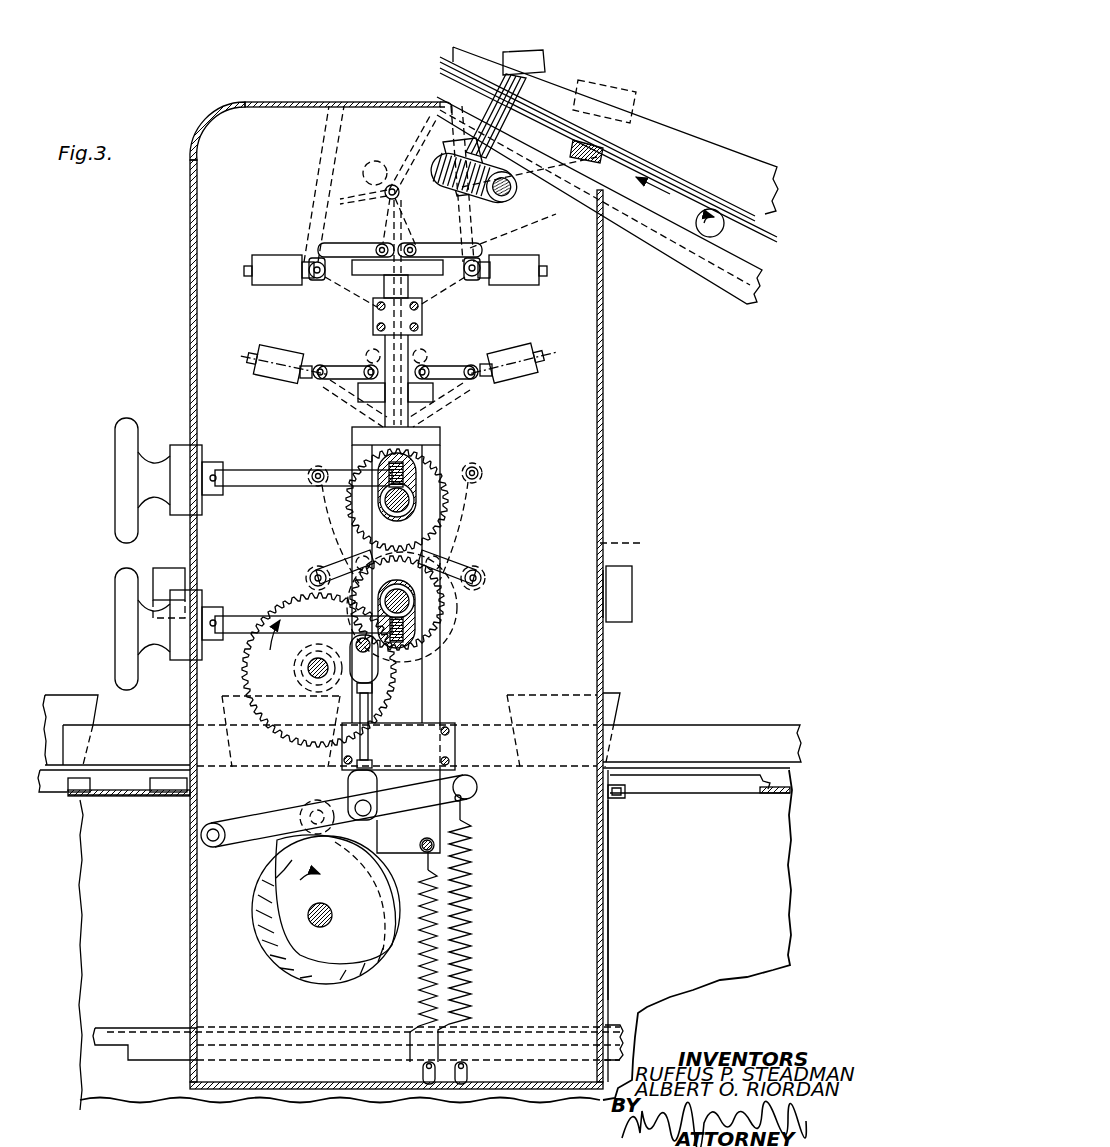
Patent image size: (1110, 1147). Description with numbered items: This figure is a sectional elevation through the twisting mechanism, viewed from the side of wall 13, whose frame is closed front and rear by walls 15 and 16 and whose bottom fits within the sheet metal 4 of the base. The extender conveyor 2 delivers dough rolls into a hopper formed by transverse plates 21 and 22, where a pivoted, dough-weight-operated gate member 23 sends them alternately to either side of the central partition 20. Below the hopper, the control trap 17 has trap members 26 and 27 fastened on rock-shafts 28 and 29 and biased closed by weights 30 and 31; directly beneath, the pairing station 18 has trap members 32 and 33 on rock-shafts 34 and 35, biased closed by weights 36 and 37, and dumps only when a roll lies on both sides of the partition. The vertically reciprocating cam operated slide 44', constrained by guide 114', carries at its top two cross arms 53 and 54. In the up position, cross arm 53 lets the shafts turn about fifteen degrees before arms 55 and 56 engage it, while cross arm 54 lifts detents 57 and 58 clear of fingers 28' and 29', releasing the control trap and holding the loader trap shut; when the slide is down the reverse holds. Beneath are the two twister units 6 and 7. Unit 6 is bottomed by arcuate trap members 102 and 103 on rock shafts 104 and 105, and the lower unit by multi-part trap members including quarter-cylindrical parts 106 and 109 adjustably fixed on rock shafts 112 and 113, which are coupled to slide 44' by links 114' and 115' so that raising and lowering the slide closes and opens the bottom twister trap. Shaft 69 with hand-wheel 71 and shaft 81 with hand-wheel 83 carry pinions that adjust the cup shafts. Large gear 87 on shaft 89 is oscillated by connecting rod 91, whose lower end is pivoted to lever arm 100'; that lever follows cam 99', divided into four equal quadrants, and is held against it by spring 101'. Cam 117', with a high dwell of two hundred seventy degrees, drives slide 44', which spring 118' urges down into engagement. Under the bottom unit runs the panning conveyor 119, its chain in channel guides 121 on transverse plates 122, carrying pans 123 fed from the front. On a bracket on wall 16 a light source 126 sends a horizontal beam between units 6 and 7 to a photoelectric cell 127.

The extender conveyor 2 is at (682, 262).
The sheet metal 4 is at (789, 843).
The twister unit 6 is at (480, 533).
The twister unit 7 is at (488, 615).
The wall 13 is at (193, 188).
The front wall 15 is at (190, 345).
The rear wall 16 is at (603, 356).
The control trap 17 is at (318, 306).
The pairing station 18 is at (322, 412).
The central partition 20 is at (390, 199).
The transverse plate 21 is at (330, 157).
The transverse plate 22 is at (524, 184).
The gate member 23 is at (422, 140).
The trap member 26 is at (366, 296).
The trap member 27 is at (438, 290).
The rock-shaft 28 is at (325, 298).
The finger 28' is at (294, 239).
The rock-shaft 29 is at (472, 296).
The finger 29' is at (519, 257).
The weight 30 is at (268, 258).
The weight 31 is at (527, 272).
The trap member 32 is at (355, 490).
The trap member 33 is at (440, 422).
The rock-shaft 34 is at (326, 388).
The rock-shaft 35 is at (490, 380).
The weight 36 is at (252, 366).
The weight 37 is at (528, 349).
The cam operated slide 44' is at (474, 669).
The cross arm 53 is at (430, 395).
The cross arm 54 is at (419, 275).
The arm 55 is at (350, 366).
The arm 56 is at (470, 365).
The detent 57 is at (350, 243).
The detent 58 is at (430, 249).
The shaft 69 is at (237, 472).
The hand-wheel 71 is at (122, 423).
The shaft 81 is at (230, 607).
The hand-wheel 83 is at (118, 592).
The large gear 87 is at (293, 723).
The shaft 89 is at (312, 677).
The connecting rod 91 is at (369, 746).
The cam 99' is at (342, 887).
The lever arm 100' is at (339, 811).
The spring 101' is at (489, 942).
The trap member 102 is at (325, 515).
The trap member 103 is at (465, 514).
The rock shaft 104 is at (312, 470).
The rock shaft 105 is at (482, 473).
The quarter-cylindrical part 106 is at (455, 625).
The quarter-cylindrical part 109 is at (330, 600).
The rock shaft 112 is at (483, 578).
The rock shaft 113 is at (312, 573).
The guide 114' is at (405, 534).
The link 115' is at (499, 556).
The cam 117' is at (326, 925).
The spring 118' is at (402, 968).
The panning conveyor 119 is at (126, 790).
The channel guides 121 is at (160, 805).
The transverse plates 122 is at (609, 900).
The pans 123 is at (50, 707).
The source of light 126 is at (633, 585).
The photoelectric cell 127 is at (160, 568).